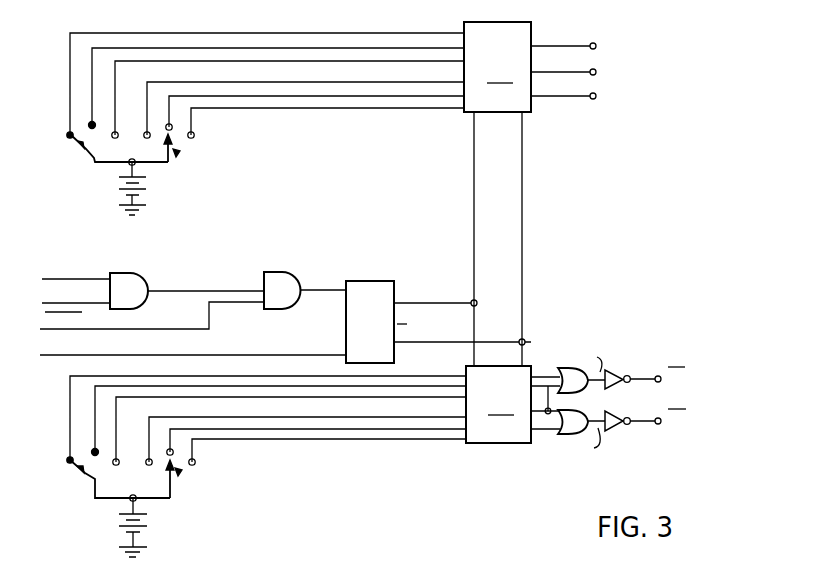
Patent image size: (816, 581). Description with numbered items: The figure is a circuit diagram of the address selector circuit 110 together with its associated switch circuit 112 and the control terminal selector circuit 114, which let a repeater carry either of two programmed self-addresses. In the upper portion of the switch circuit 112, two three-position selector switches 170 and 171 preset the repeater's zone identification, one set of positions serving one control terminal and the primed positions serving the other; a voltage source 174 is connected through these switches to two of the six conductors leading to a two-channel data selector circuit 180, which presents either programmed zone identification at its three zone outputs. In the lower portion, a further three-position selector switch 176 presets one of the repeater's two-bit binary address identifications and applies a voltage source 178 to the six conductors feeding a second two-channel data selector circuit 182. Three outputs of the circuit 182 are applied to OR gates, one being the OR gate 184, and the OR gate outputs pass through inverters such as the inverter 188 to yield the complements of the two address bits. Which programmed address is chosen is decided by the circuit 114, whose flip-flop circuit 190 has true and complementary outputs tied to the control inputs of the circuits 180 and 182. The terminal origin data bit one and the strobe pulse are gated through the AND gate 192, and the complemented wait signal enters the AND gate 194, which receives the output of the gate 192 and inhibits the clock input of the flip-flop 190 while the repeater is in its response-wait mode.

The address selector circuit 110 is at (569, 224).
The switch circuit 112 is at (177, 158).
The control terminal selector circuit 114 is at (222, 271).
The three-position selector switch 170 is at (87, 160).
The three-position selector switch 171 is at (176, 143).
The voltage source 174 is at (141, 191).
The three-position selector switch 176 is at (171, 493).
The voltage source 178 is at (146, 521).
The two-channel data selector circuit 180 is at (538, 67).
The two-channel data selector circuit 182 is at (513, 404).
The OR gate 184 is at (628, 426).
The inverter 188 is at (607, 371).
The flip-flop circuit 190 is at (372, 281).
The AND gate 192 is at (132, 273).
The AND gate 194 is at (288, 272).